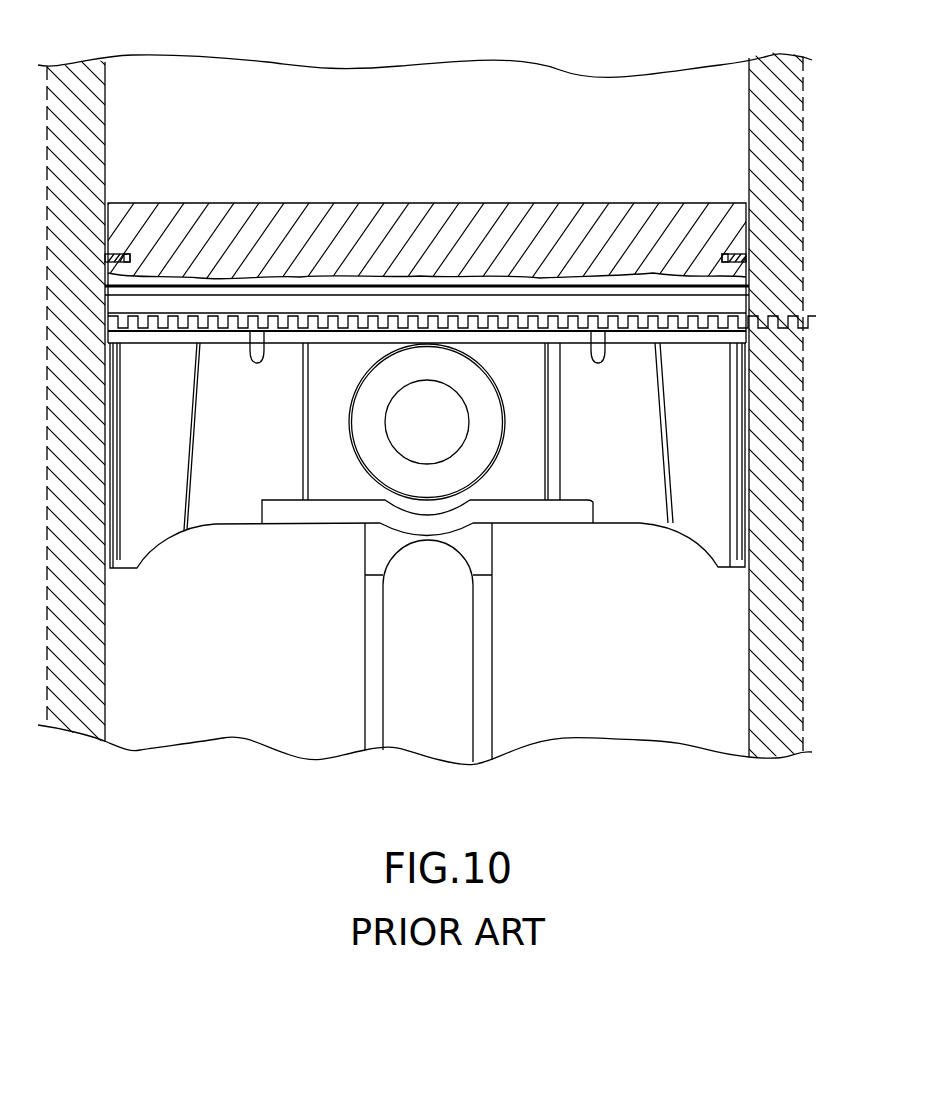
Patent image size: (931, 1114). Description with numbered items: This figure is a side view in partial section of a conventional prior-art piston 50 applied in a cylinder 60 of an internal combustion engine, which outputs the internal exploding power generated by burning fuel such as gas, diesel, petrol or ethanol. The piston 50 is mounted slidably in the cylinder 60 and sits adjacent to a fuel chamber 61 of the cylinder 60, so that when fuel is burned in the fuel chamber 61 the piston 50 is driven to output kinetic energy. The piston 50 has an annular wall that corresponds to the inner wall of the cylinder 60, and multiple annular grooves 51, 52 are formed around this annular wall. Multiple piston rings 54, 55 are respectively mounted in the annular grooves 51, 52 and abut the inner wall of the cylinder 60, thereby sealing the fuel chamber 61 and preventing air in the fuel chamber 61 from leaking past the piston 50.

The piston 50 is at (473, 456).
The annular groove 51 is at (748, 235).
The annular groove 52 is at (746, 280).
The piston ring 54 is at (748, 258).
The piston ring 55 is at (748, 292).
The cylinder 60 is at (793, 403).
The fuel chamber 61 is at (568, 98).